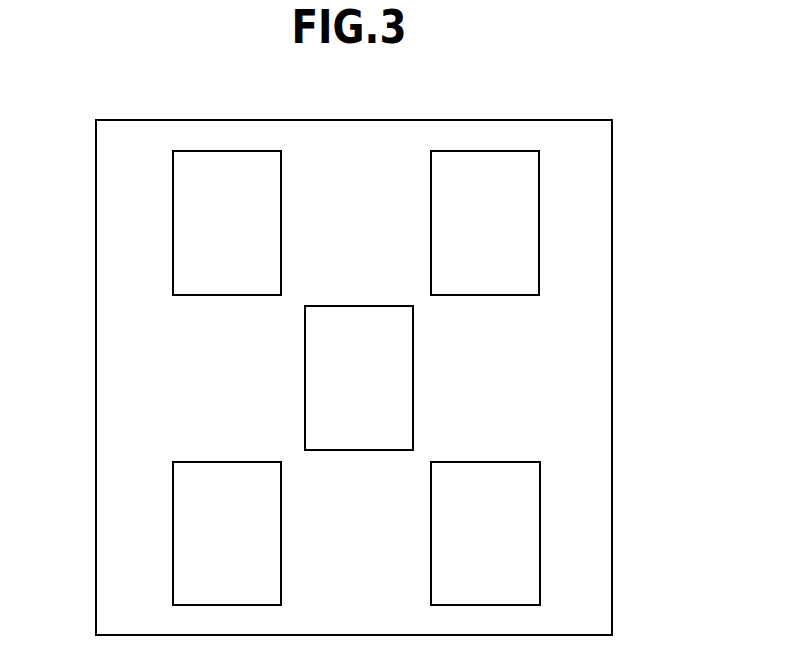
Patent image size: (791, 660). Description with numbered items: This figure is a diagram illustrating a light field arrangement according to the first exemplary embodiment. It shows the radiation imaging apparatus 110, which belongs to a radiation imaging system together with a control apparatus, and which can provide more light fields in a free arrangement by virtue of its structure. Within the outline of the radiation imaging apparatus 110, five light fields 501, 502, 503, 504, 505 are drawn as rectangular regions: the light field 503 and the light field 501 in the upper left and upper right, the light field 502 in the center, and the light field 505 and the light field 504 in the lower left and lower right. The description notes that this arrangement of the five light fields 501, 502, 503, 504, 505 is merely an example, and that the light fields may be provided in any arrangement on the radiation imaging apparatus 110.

The radiation imaging apparatus 110 is at (612, 160).
The light field 501 is at (539, 222).
The light field 502 is at (413, 372).
The light field 503 is at (173, 217).
The light field 504 is at (540, 530).
The light field 505 is at (173, 532).